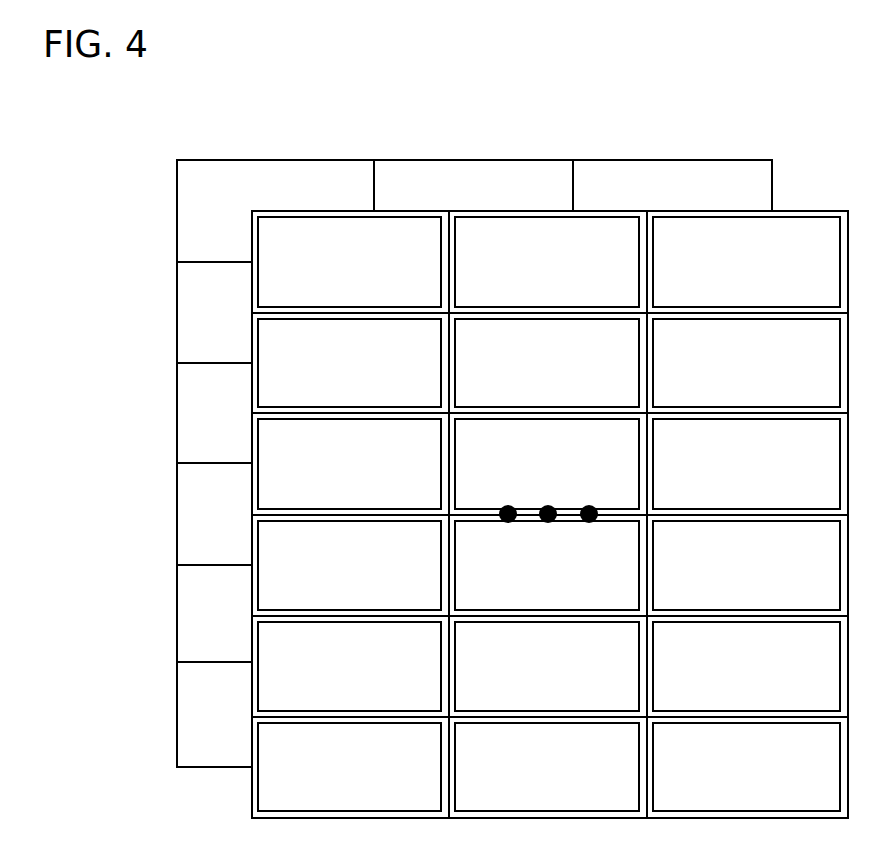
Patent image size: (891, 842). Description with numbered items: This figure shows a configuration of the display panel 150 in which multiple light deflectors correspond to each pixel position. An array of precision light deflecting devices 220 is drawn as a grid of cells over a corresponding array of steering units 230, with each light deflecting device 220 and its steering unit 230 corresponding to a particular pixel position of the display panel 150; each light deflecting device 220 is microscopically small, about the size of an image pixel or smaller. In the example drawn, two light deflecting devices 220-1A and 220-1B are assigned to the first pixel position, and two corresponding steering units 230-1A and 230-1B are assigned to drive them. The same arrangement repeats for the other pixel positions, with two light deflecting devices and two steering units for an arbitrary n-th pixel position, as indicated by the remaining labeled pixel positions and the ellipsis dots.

The display panel 150 is at (221, 110).
The steering unit 230 is at (423, 160).
The precision light deflecting device 220 is at (497, 211).
The steering unit 230-1A is at (275, 211).
The steering unit 230-1B is at (214, 312).
The light deflecting device 220-1A is at (349, 262).
The light deflecting device 220-1B is at (349, 363).